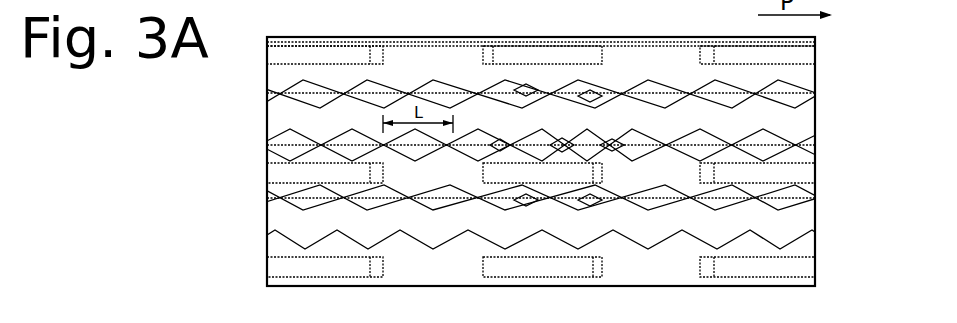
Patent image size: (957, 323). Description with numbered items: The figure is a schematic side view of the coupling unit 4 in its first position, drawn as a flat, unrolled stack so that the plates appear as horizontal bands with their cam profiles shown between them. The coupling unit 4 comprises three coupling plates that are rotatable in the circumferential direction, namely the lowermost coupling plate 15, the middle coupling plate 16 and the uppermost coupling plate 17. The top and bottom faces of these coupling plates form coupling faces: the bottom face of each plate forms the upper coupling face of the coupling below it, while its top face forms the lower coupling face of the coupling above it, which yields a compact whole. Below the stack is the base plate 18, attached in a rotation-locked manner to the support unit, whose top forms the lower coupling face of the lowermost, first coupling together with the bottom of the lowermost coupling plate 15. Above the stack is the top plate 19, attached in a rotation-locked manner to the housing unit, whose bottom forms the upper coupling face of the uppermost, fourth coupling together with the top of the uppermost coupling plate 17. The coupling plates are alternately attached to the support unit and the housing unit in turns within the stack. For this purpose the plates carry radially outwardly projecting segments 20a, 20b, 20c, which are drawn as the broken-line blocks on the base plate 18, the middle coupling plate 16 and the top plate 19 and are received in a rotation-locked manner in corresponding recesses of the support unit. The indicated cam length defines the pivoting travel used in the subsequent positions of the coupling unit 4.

The coupling unit 4 is at (828, 79).
The lowermost coupling plate 15 is at (772, 228).
The middle coupling plate 16 is at (662, 173).
The uppermost coupling plate 17 is at (768, 117).
The base plate 18 is at (657, 262).
The top plate 19 is at (641, 67).
The radially outwardly projecting segment 20a is at (503, 267).
The radially outwardly projecting segment 20b is at (578, 177).
The radially outwardly projecting segment 20c is at (530, 58).